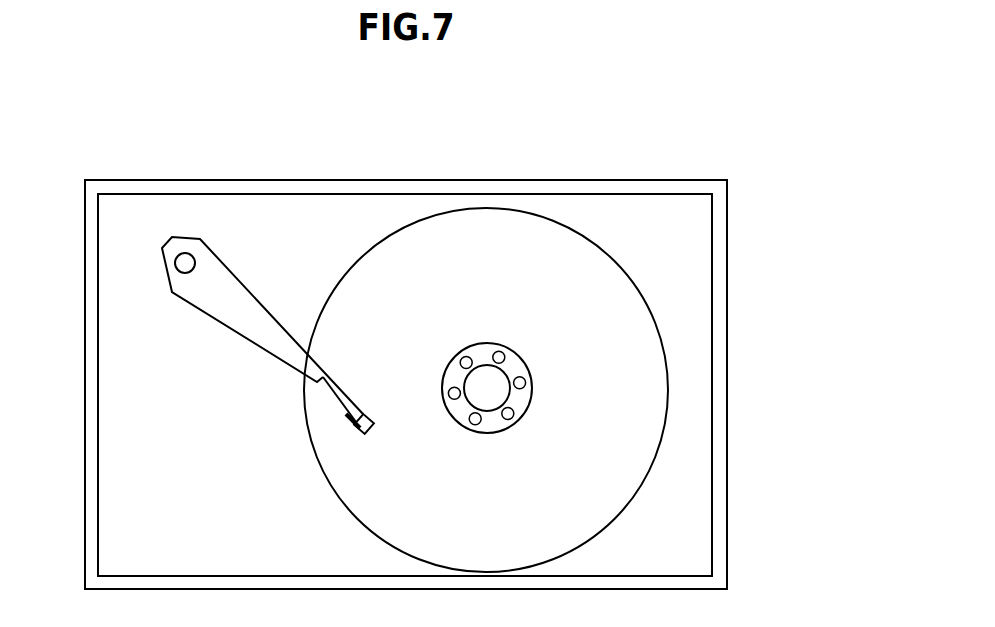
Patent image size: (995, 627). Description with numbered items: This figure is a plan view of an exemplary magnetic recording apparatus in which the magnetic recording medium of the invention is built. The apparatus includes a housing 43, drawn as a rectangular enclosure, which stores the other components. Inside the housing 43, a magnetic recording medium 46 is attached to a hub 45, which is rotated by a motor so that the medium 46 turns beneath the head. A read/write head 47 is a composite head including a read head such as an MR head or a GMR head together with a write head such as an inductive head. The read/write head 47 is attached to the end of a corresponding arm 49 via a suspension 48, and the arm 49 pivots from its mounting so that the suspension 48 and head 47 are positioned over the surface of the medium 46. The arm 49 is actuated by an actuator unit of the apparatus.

The housing 43 is at (717, 572).
The hub 45 is at (513, 367).
The magnetic recording medium 46 is at (530, 233).
The read/write head 47 is at (372, 413).
The suspension 48 is at (334, 388).
The arm 49 is at (233, 333).